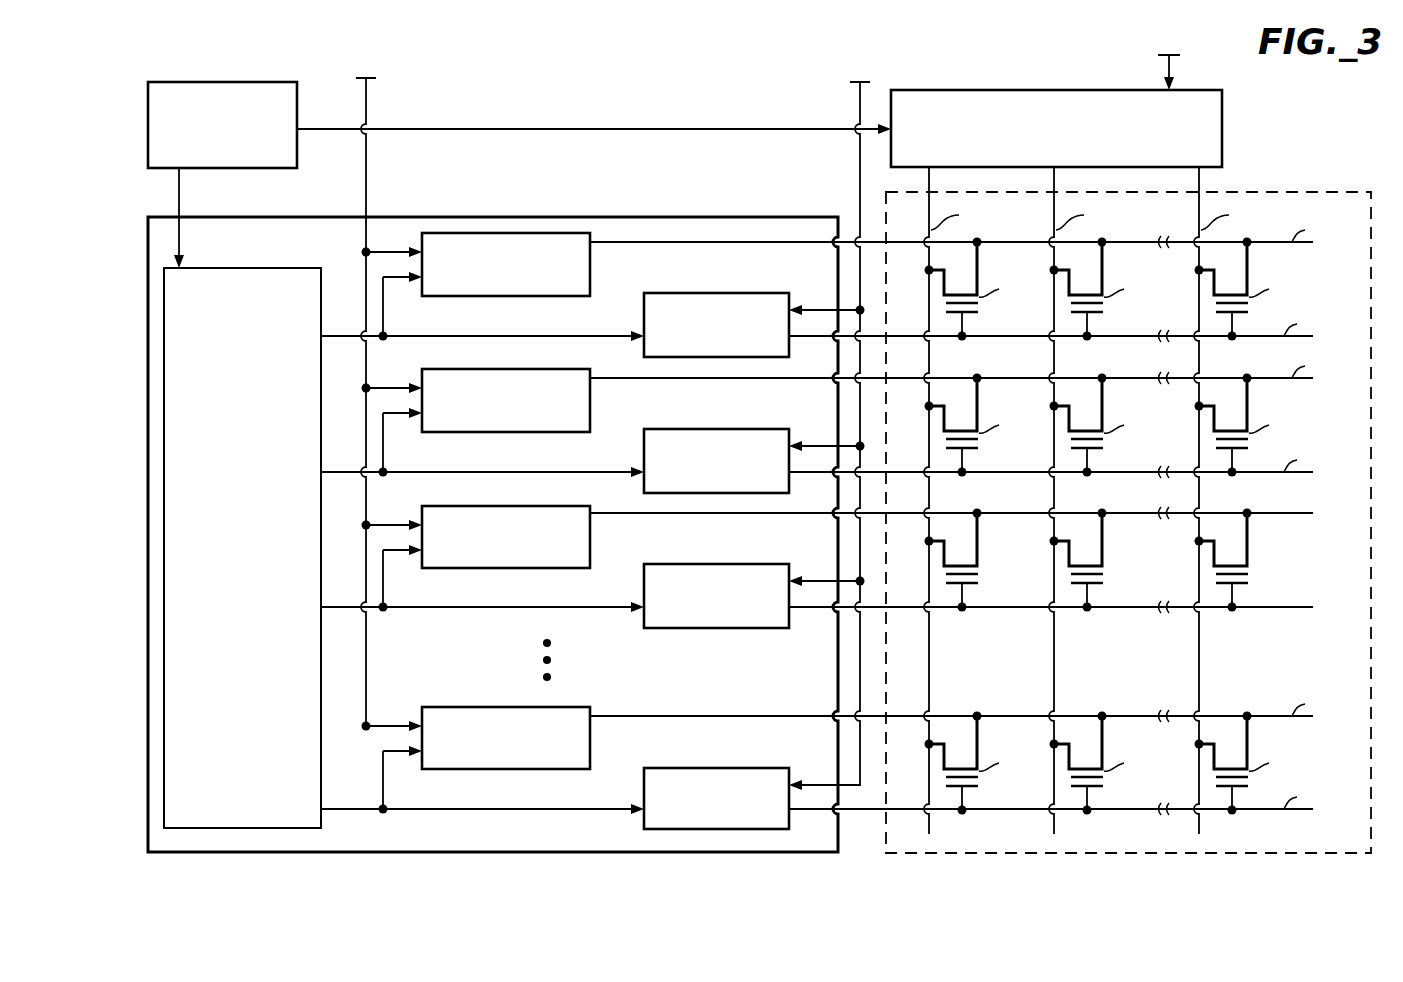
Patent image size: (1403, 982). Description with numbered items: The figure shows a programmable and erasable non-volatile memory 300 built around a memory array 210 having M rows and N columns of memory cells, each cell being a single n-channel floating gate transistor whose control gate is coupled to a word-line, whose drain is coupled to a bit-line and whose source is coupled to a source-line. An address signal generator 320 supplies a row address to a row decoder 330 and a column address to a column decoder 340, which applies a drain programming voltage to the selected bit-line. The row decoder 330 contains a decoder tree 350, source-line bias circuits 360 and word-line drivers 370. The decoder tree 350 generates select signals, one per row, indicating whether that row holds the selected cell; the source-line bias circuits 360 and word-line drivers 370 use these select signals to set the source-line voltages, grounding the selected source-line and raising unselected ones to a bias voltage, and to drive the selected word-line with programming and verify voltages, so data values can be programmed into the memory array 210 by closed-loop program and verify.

The non-volatile memory 300 is at (1271, 134).
The address signal generator 320 is at (200, 83).
The row decoder 330 is at (745, 217).
The column decoder 340 is at (972, 90).
The decoder tree 350 is at (223, 636).
The source-line bias circuits 360 is at (508, 516).
The word-line drivers 370 is at (716, 544).
The memory array 210 is at (1293, 192).